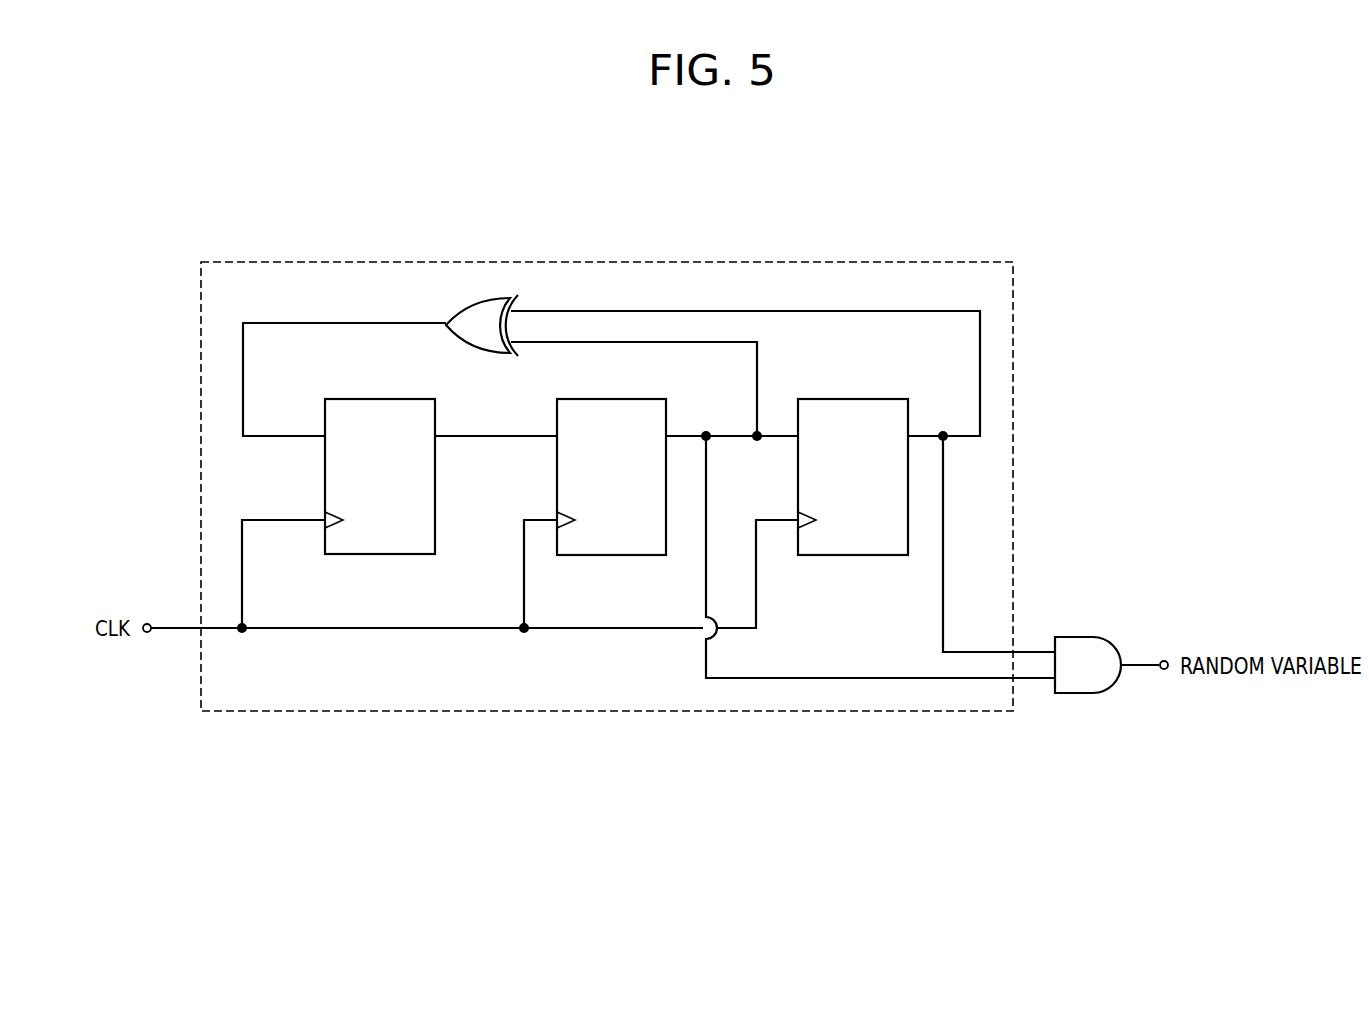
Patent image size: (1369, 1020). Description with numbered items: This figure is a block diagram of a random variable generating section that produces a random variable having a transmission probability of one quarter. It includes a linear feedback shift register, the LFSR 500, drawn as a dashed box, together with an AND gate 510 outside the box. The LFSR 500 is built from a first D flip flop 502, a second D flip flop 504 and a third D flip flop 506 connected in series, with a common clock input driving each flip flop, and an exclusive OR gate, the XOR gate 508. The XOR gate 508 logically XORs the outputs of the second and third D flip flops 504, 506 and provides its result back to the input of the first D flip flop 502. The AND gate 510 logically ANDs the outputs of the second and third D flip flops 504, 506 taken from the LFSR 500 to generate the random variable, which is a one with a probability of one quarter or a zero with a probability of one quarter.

The LFSR (Linear Feedback Shift Register) 500 is at (1013, 468).
The first D flip flop 502 is at (383, 556).
The second D flip flop 504 is at (614, 557).
The third D flip flop 506 is at (856, 557).
The exclusive OR (XOR) gate 508 is at (490, 355).
The AND gate 510 is at (1073, 635).